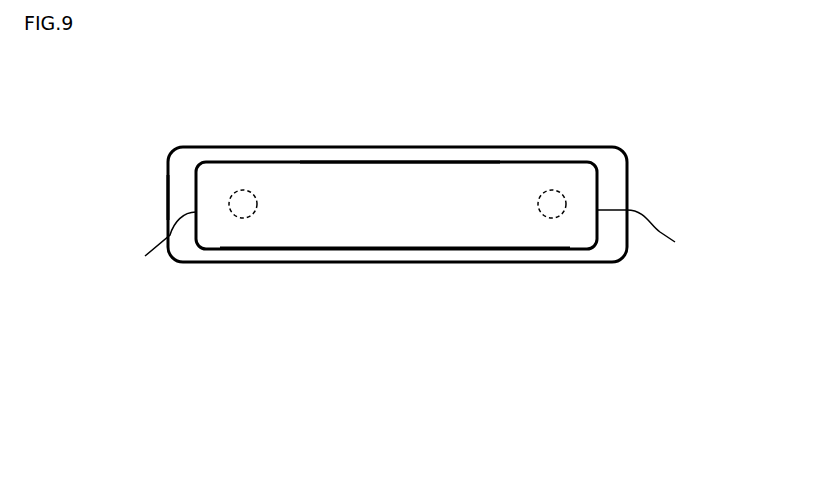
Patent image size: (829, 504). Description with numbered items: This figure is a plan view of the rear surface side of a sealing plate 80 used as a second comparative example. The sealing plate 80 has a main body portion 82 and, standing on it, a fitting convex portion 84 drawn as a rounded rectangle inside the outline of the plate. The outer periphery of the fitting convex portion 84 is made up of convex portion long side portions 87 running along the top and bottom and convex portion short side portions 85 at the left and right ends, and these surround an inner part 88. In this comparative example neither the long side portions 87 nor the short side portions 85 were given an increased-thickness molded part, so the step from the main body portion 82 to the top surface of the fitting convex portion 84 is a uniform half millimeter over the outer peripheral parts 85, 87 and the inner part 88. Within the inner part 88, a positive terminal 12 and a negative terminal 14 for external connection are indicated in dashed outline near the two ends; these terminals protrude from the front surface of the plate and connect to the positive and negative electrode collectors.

The sealing plate 80 is at (571, 142).
The main body portion 82 is at (283, 153).
The fitting convex portion 84 is at (503, 157).
The convex portion short side portions 85 is at (409, 242).
The convex portion long side portions 87 is at (403, 162).
The inner part 88 is at (355, 216).
The positive terminal 12 is at (248, 218).
The negative terminal 14 is at (556, 218).